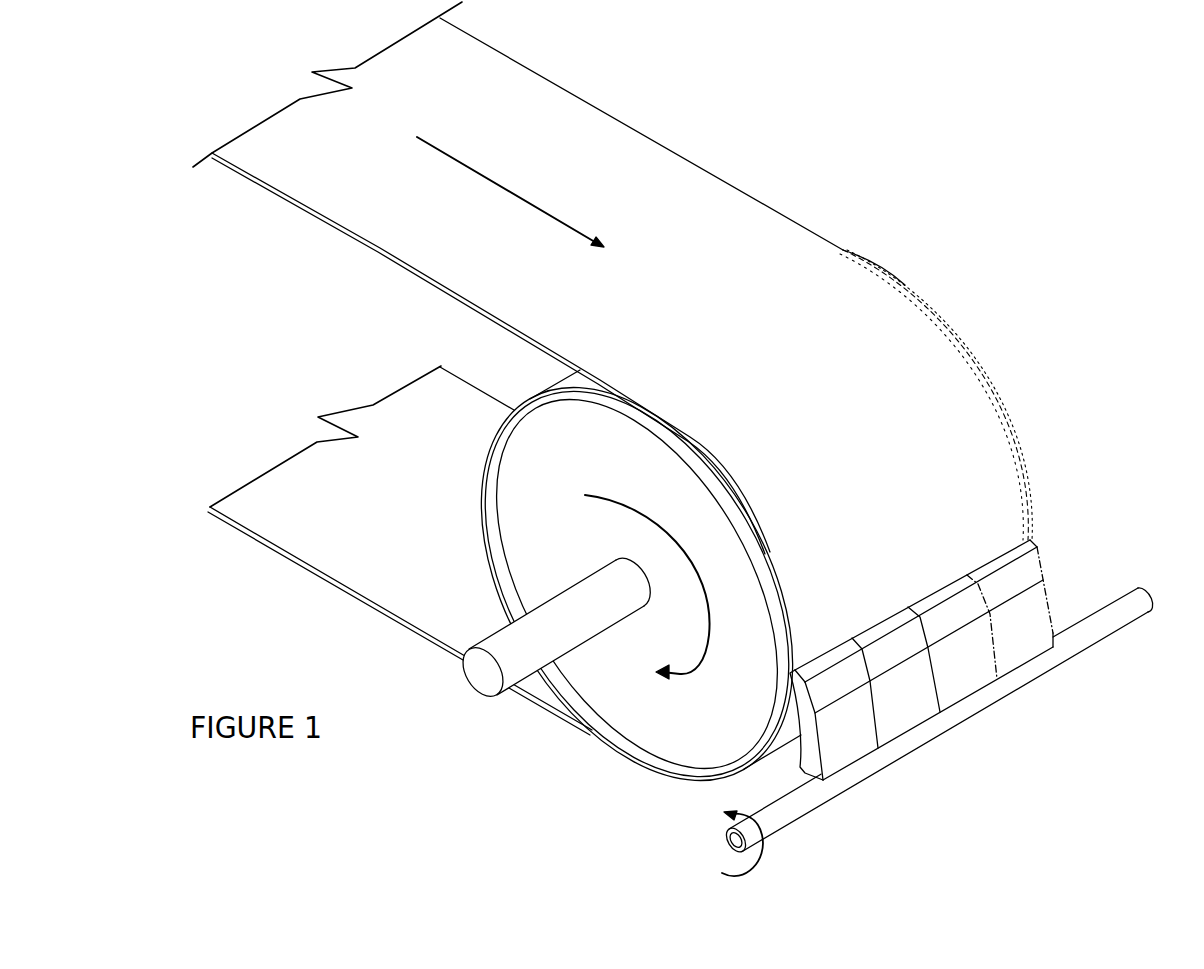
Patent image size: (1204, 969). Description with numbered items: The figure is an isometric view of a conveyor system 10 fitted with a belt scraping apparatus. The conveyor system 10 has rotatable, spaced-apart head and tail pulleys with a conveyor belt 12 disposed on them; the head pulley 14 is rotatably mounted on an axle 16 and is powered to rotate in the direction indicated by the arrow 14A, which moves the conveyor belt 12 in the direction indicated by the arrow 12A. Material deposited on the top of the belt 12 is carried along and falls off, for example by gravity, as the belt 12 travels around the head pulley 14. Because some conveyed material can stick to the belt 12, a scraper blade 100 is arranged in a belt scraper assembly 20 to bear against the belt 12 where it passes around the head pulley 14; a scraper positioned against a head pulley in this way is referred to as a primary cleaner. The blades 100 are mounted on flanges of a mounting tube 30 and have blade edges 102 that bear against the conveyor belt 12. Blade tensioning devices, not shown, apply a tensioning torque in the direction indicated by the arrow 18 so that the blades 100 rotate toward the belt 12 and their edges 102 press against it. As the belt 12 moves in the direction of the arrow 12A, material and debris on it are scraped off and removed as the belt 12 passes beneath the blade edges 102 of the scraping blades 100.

The conveyor system 10 is at (912, 150).
The conveyor belt 12 is at (737, 197).
The arrow indicating belt direction 12A is at (598, 236).
The head pulley 14 is at (622, 760).
The arrow indicating pulley rotation direction 14A is at (695, 674).
The axle 16 is at (467, 672).
The arrow indicating tensioning torque direction 18 is at (763, 857).
The belt scraper assembly 20 is at (1127, 489).
The mounting tube 30 is at (1100, 656).
The scraper blade 100 is at (848, 752).
The blade edges 102 is at (995, 558).